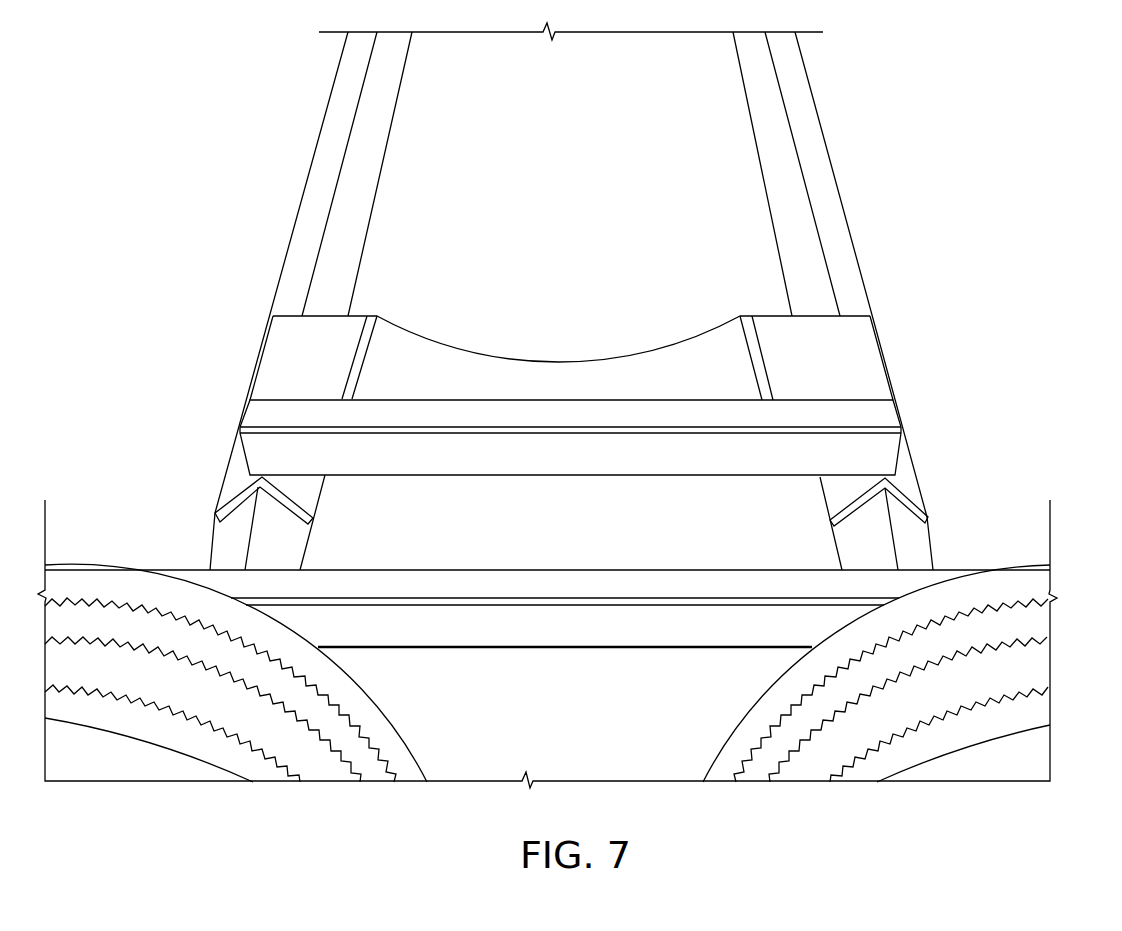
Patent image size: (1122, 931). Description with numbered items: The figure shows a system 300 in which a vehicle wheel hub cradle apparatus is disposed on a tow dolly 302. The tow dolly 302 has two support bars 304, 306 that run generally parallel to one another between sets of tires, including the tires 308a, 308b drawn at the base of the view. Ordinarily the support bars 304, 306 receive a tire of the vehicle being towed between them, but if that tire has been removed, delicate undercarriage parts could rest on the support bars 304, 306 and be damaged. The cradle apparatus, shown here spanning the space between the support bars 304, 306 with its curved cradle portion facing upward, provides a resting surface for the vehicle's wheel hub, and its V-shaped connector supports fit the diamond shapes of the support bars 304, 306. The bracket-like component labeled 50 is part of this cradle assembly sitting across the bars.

The system 300 is at (1016, 211).
The tow dolly 302 is at (843, 190).
The support bar 304 is at (806, 115).
The support bar 306 is at (322, 195).
The mounting bracket 50 is at (868, 367).
The tire 308a is at (327, 750).
The tire 308b is at (852, 770).